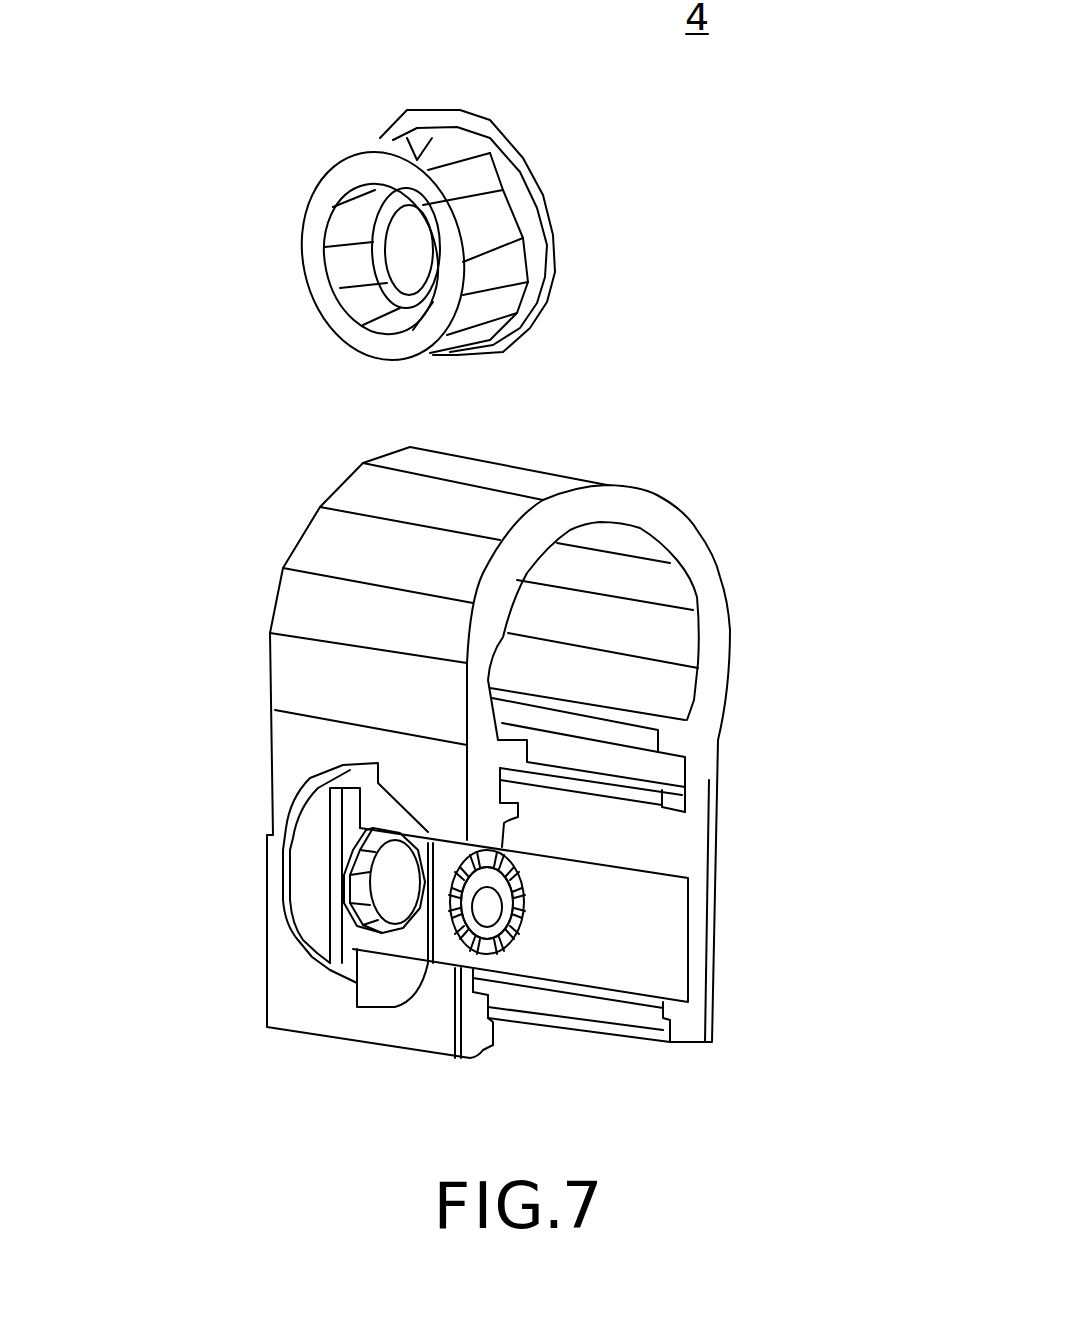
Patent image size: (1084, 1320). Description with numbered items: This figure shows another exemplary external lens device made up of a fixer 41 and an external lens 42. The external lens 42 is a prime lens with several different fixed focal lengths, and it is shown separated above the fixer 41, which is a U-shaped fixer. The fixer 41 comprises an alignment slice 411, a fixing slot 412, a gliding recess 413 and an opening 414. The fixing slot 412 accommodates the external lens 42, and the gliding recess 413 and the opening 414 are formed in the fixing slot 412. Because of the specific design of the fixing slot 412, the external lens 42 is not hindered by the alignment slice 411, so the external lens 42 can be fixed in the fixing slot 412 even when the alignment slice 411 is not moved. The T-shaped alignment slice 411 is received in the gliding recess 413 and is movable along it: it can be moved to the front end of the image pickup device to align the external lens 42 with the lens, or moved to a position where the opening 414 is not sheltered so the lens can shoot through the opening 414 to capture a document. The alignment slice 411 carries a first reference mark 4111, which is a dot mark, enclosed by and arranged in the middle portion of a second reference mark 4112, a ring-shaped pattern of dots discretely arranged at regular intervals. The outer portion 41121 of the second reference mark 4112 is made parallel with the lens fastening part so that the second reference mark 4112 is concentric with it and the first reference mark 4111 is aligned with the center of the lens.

The fixer 41 is at (510, 771).
The external lens 42 is at (419, 223).
The alignment slice 411 is at (590, 895).
The fixing slot 412 is at (301, 867).
The gliding recess 413 is at (653, 823).
The opening 414 is at (289, 854).
The first reference mark 4111 is at (391, 989).
The second reference mark 4112 is at (568, 984).
The outer portion 41121 is at (665, 789).